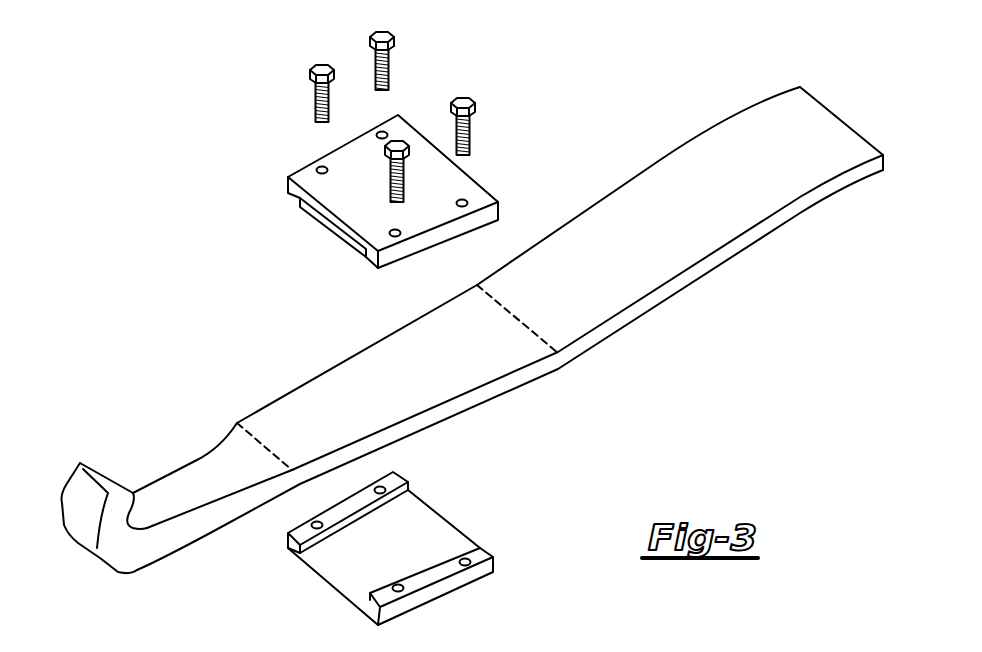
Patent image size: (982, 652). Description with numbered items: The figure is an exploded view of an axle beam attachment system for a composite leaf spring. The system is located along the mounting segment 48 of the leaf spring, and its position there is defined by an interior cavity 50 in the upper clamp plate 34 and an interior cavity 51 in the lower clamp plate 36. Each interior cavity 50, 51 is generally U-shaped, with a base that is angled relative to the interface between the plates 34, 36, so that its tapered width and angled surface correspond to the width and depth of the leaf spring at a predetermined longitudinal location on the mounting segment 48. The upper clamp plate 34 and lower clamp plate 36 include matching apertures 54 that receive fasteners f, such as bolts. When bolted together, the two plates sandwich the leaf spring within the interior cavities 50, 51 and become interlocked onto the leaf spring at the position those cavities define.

The upper clamp plate 34 is at (396, 152).
The lower clamp plate 36 is at (438, 548).
The mounting segment 48 is at (403, 396).
The interior cavity 50 is at (332, 232).
The interior cavity 51 is at (413, 528).
The apertures 54 is at (322, 166).
The fasteners (bolts) f is at (472, 137).